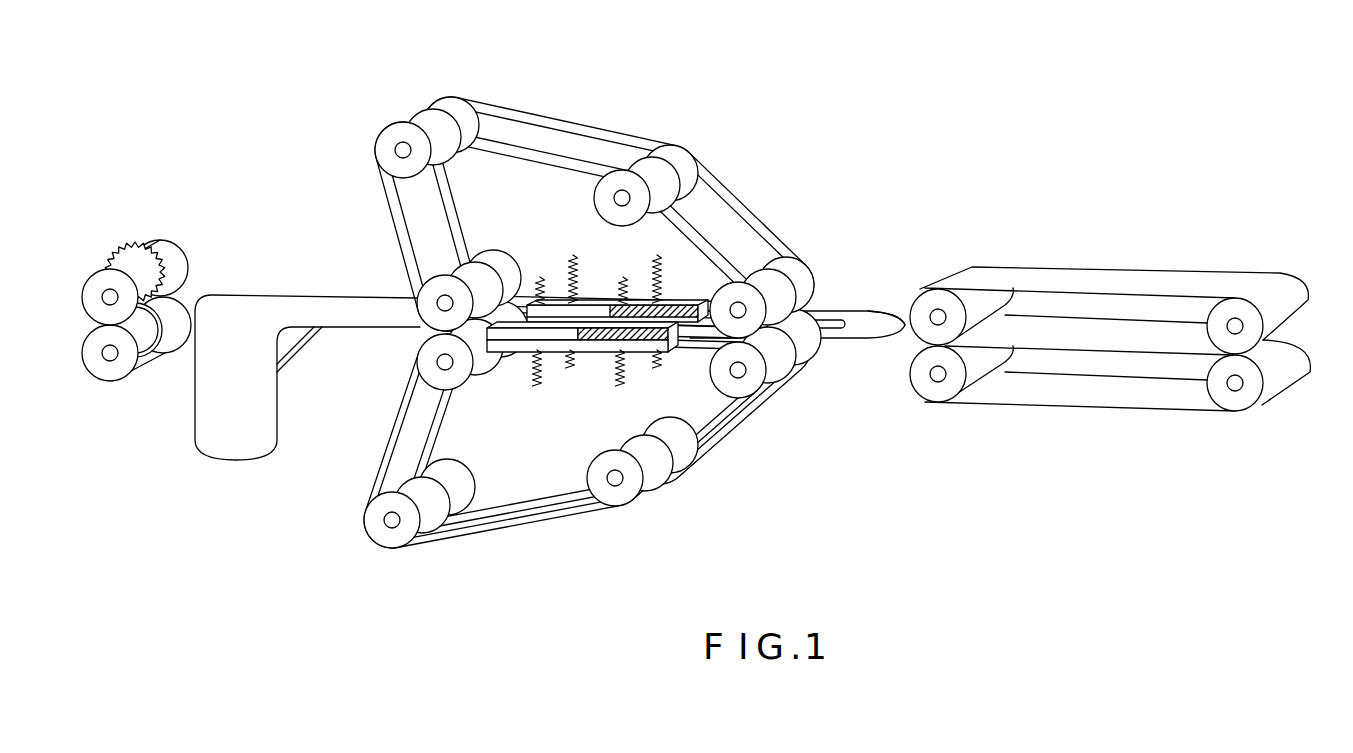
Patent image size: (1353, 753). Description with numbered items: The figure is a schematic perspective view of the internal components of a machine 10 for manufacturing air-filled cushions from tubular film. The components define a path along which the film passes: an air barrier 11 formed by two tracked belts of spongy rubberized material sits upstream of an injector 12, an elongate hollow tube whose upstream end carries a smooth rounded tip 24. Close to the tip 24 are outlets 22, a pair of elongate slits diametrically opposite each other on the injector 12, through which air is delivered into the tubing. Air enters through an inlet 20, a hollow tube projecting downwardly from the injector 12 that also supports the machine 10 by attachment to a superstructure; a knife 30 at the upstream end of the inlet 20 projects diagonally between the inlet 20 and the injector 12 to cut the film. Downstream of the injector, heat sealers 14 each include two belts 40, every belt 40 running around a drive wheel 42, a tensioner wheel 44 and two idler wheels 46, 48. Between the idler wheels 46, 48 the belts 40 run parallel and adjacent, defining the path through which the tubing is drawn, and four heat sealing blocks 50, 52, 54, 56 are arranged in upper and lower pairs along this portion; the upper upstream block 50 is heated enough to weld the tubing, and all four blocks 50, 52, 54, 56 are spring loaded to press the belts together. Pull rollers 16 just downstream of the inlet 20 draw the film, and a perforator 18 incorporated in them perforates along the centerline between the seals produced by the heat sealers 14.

The machine 10 is at (865, 145).
The air barrier 11 is at (1097, 265).
The injector 12 is at (867, 330).
The heat sealers 14 is at (713, 465).
The pull rollers 16 is at (127, 362).
The perforator 18 is at (160, 245).
The air inlet 20 is at (215, 462).
The outlets 22 is at (837, 340).
The tip 24 is at (903, 310).
The knife 30 is at (300, 362).
The belts 40 is at (510, 137).
The drive wheel 42 is at (387, 540).
The tensioner wheel 44 is at (618, 500).
The idler wheel 46 is at (737, 290).
The idler wheel 48 is at (432, 295).
The heat sealing block 50 is at (600, 313).
The heat sealing block 52 is at (590, 350).
The heat sealing block 54 is at (517, 322).
The heat sealing block 56 is at (523, 343).